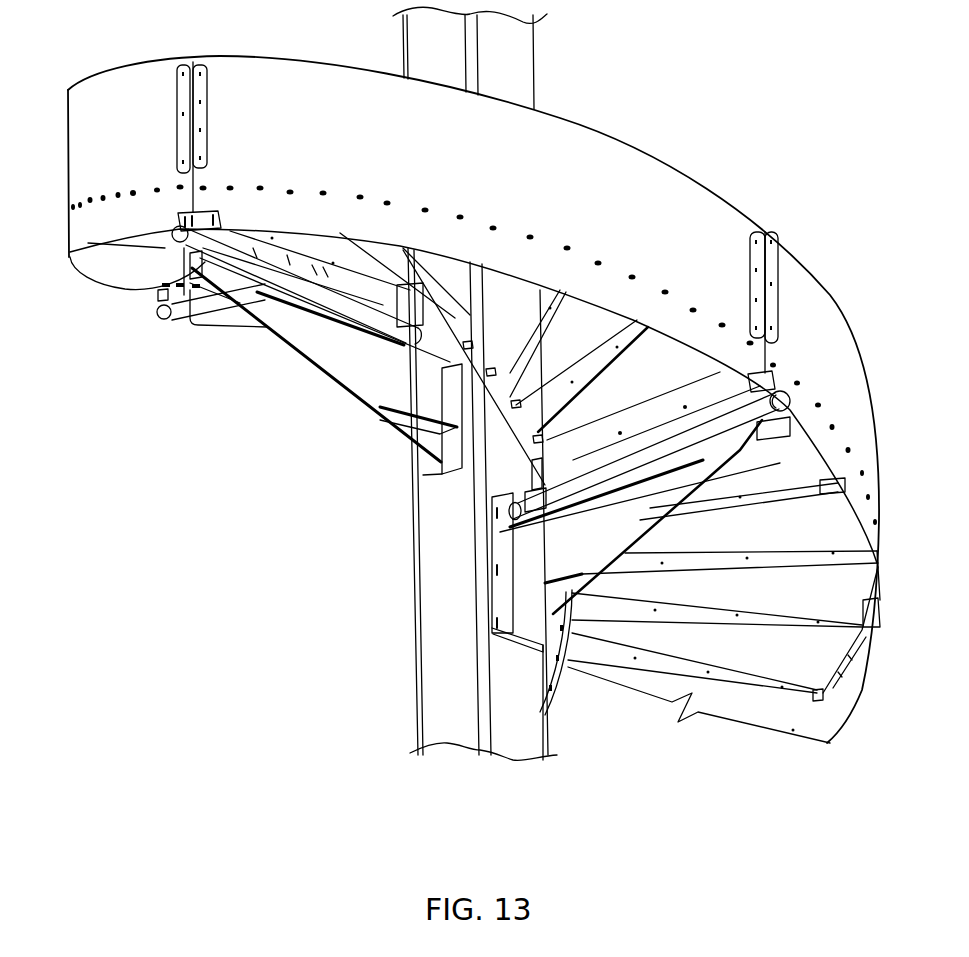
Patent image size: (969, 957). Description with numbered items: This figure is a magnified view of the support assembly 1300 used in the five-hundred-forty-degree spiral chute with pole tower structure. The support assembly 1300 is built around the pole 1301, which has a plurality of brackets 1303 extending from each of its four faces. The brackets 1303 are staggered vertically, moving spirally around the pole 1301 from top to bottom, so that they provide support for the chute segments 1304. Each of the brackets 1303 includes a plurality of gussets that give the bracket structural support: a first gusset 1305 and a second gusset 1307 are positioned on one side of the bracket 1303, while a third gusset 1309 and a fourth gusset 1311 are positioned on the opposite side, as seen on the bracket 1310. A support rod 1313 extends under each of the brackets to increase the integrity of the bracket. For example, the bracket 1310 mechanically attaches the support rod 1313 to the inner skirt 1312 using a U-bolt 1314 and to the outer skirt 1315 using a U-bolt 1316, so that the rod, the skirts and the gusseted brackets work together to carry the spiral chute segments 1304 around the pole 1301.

The support assembly 1300 is at (666, 859).
The pole 1301 is at (432, 552).
The brackets 1303 is at (344, 363).
The chute segments 1304 is at (805, 535).
The first gusset 1305 is at (420, 420).
The second gusset 1307 is at (337, 328).
The third gusset 1309 is at (512, 626).
The bracket 1310 is at (517, 598).
The fourth gusset 1311 is at (528, 567).
The inner skirt 1312 is at (500, 383).
The support rod 1313 is at (658, 452).
The U-bolt 1314 is at (485, 490).
The outer skirt 1315 is at (803, 297).
The U-bolt 1316 is at (775, 388).